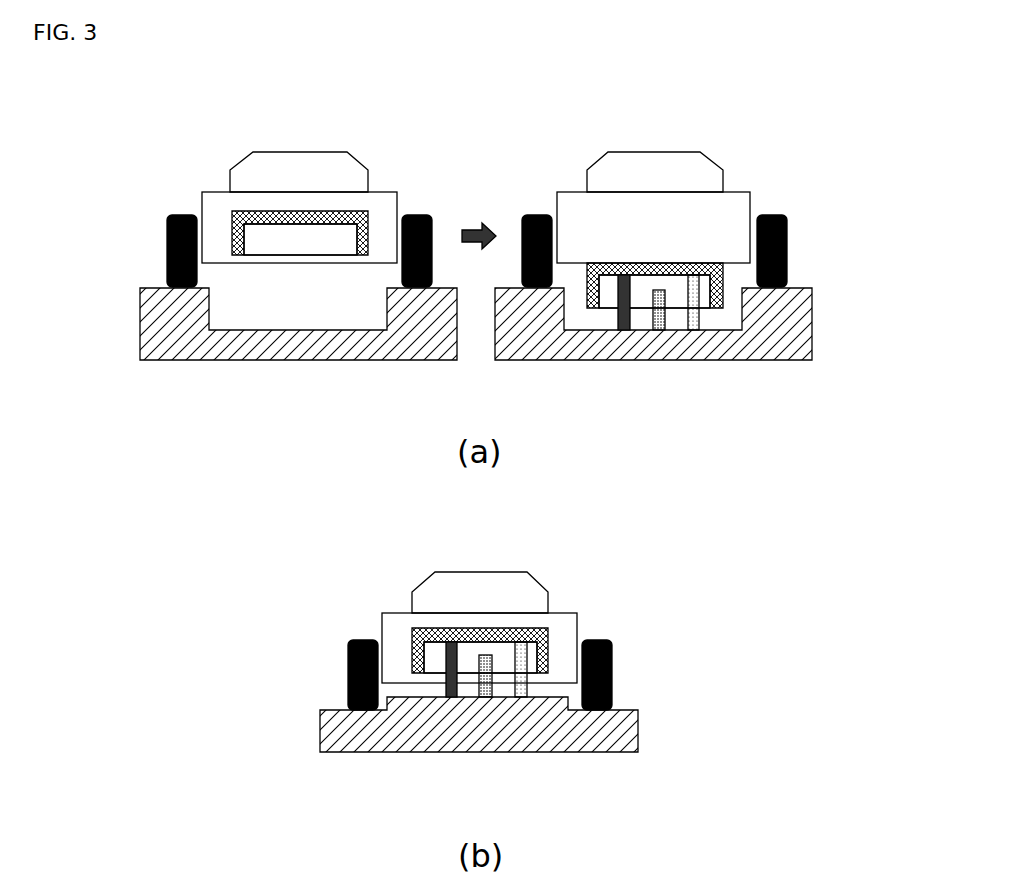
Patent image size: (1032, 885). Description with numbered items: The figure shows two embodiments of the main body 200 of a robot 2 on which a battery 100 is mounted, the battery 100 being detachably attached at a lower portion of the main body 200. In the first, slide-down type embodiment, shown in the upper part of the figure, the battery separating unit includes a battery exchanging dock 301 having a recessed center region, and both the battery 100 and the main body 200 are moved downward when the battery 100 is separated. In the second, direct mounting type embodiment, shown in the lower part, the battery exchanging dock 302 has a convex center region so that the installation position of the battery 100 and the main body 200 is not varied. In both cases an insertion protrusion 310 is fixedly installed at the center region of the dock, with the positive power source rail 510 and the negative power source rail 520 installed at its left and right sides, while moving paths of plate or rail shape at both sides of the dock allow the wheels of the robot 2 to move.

The robot 2 is at (297, 160).
The main body 200 is at (230, 225).
The battery 100 is at (300, 240).
The battery exchanging dock 301 is at (150, 323).
The battery exchanging dock 302 is at (638, 733).
The positive power source rail 510 is at (625, 330).
The insertion protrusion 310 is at (655, 332).
The negative power source rail 520 is at (694, 330).